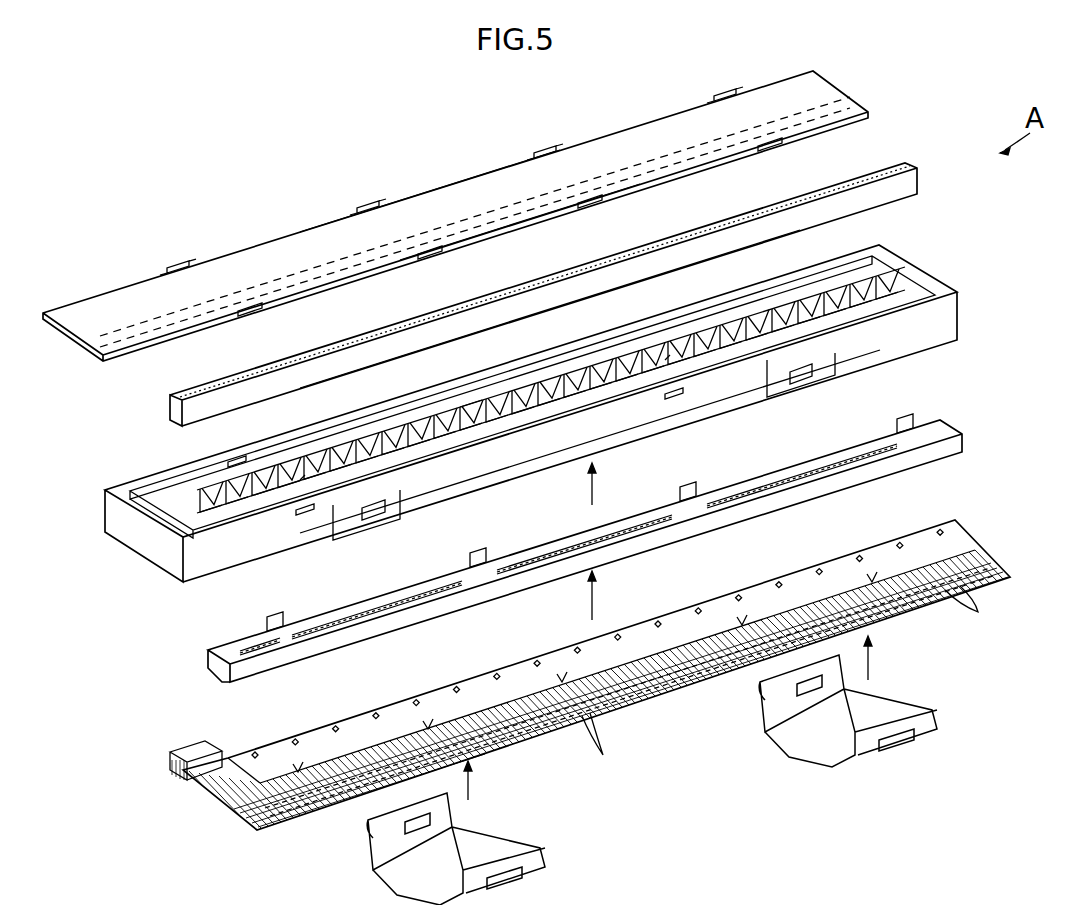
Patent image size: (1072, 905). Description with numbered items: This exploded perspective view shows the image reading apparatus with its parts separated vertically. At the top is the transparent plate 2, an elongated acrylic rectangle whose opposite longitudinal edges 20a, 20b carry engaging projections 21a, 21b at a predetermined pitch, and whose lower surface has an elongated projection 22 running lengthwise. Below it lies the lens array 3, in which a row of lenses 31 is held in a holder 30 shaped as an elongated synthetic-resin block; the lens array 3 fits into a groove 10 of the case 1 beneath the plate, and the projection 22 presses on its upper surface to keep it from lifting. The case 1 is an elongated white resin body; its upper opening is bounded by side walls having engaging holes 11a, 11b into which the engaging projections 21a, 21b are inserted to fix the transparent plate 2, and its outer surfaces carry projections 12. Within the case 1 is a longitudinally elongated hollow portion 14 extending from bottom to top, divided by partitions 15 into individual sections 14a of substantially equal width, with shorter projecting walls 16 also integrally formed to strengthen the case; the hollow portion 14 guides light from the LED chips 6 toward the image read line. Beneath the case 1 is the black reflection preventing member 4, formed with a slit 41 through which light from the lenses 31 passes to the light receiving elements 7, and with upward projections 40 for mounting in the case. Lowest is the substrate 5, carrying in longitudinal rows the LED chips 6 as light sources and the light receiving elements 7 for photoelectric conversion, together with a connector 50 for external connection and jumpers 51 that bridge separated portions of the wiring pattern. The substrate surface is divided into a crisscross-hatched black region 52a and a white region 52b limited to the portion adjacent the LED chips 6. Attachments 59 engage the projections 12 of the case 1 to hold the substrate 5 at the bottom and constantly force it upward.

The case 1 is at (946, 279).
The transparent plate 2 is at (785, 80).
The lens array 3 is at (922, 180).
The reflection preventing member 4 is at (962, 428).
The substrate 5 is at (990, 551).
The LED chips 6 is at (940, 528).
The light receiving elements 7 is at (965, 592).
The groove 10 is at (880, 315).
The engaging holes 11a is at (228, 462).
The engaging holes 11b is at (303, 515).
The projections 12 is at (800, 386).
The hollow portion 14 is at (848, 298).
The individual sections 14a is at (470, 405).
The partitions 15 is at (730, 330).
The projecting walls 16 is at (662, 362).
The longitudinal edge 20a is at (442, 190).
The longitudinal edge 20b is at (510, 240).
The engaging projections 21a is at (180, 266).
The engaging projections 21b is at (252, 313).
The elongated projection 22 is at (345, 290).
The holder 30 is at (904, 203).
The lenses 31 is at (882, 175).
The projections 40 is at (278, 617).
The slit 41 is at (578, 545).
The connector 50 is at (190, 746).
The jumpers 51 is at (874, 575).
The black region 52a is at (550, 735).
The white region 52b is at (512, 660).
The attachments 59 is at (888, 717).